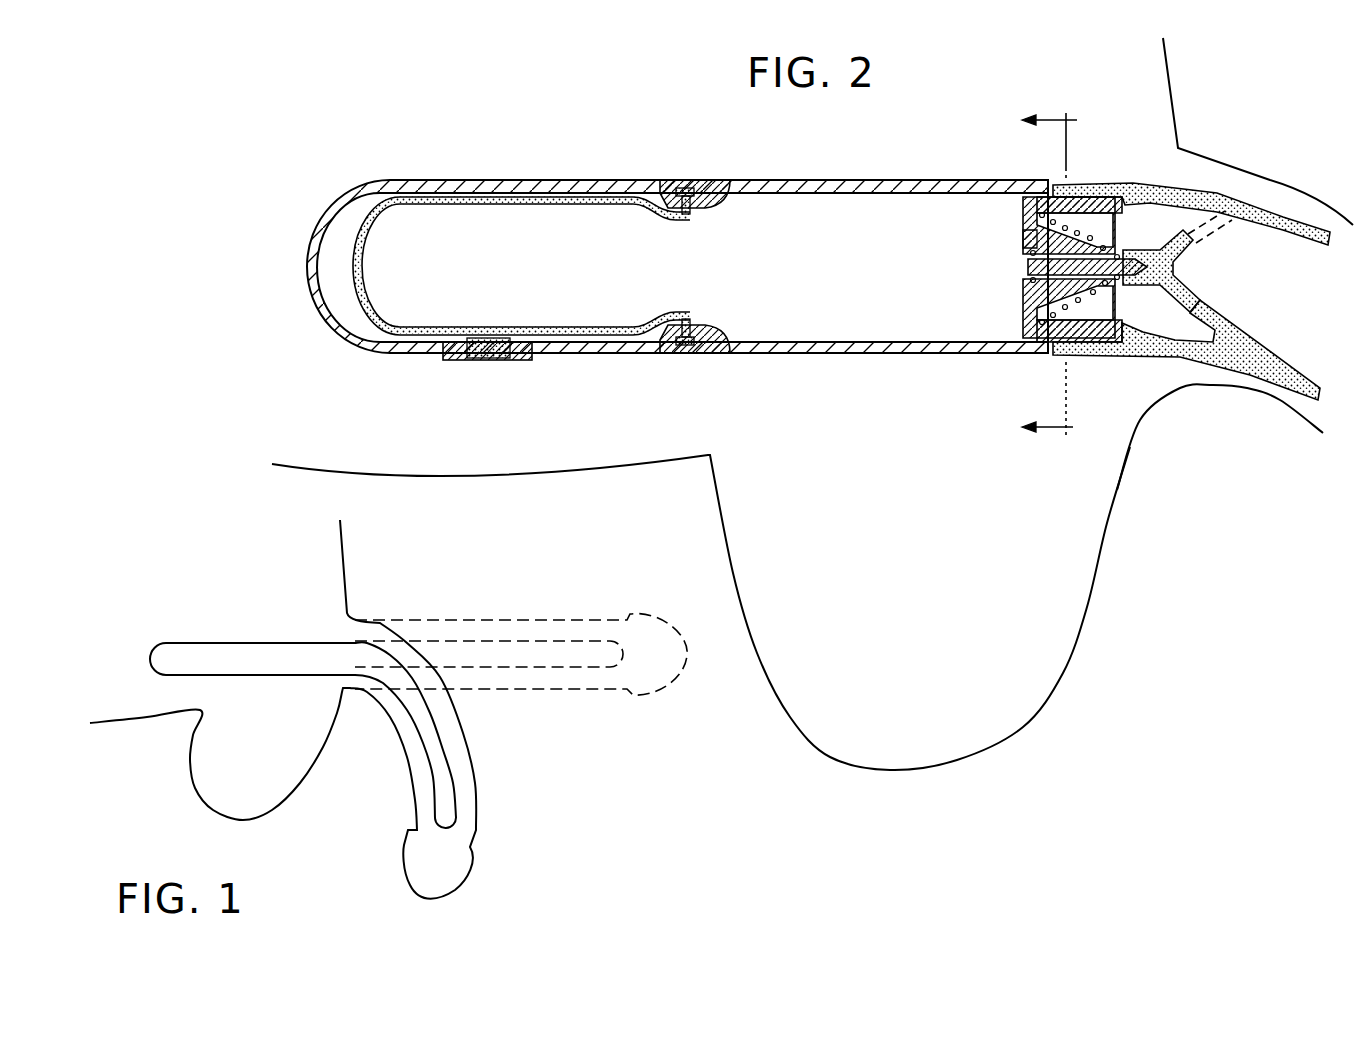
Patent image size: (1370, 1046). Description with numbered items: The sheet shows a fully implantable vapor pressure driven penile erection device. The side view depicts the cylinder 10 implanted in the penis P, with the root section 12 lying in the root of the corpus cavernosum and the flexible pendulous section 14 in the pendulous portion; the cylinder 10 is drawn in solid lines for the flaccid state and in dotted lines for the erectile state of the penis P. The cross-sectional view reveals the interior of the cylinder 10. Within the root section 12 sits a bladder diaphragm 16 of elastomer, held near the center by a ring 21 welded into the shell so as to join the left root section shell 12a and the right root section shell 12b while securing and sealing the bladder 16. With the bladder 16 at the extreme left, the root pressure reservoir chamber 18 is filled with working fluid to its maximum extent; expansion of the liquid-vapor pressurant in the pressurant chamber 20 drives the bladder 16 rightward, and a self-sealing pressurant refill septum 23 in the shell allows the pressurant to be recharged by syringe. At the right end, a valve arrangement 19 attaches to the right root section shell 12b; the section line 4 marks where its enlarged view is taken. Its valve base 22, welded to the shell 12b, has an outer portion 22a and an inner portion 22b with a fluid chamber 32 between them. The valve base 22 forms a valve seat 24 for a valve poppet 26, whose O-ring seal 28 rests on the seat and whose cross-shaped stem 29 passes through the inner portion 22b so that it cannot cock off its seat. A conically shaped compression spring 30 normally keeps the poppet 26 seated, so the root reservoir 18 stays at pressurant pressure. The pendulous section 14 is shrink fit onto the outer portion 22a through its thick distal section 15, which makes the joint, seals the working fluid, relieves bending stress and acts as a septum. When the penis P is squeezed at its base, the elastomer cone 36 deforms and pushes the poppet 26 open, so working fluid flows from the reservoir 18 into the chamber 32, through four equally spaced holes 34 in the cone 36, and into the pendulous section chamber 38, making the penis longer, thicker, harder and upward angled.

In FIG. 2, the section line 4- 4 is at (1045, 276).
In FIG. 2, the cylinder 10 is at (1125, 161).
In FIG. 1, the cylinder 10 is at (331, 622).
In FIG. 2, the root section 12 is at (674, 154).
In FIG. 1, the root section 12 is at (243, 642).
In FIG. 2, the left root section shell 12a is at (530, 180).
In FIG. 2, the right root section shell 12b is at (822, 180).
In FIG. 2, the pendulous section 14 is at (1297, 388).
In FIG. 1, the pendulous section 14 is at (543, 642).
In FIG. 2, the thick distal section 15 is at (1218, 214).
In FIG. 2, the bladder diaphragm 16 is at (504, 205).
In FIG. 2, the root pressure reservoir chamber 18 is at (830, 268).
In FIG. 2, the valve arrangement 19 is at (1137, 365).
In FIG. 2, the pressurant chamber 20 is at (330, 265).
In FIG. 2, the ring 21 is at (703, 327).
In FIG. 2, the valve base 22 is at (1022, 205).
In FIG. 2, the valve base outer portion 22a is at (1058, 184).
In FIG. 2, the valve base inner portion 22b is at (1065, 306).
In FIG. 2, the pressurant refill septum 23 is at (490, 360).
In FIG. 2, the valve seat 24 is at (1022, 239).
In FIG. 2, the valve poppet 26 is at (1023, 262).
In FIG. 2, the O-ring seal 28 is at (1036, 280).
In FIG. 2, the stem 29 is at (1112, 258).
In FIG. 2, the conically shaped compression spring 30 is at (1106, 247).
In FIG. 2, the fluid chamber 32 is at (1162, 317).
In FIG. 2, the holes 34 is at (1198, 306).
In FIG. 2, the elastomer cone 36 is at (1237, 332).
In FIG. 2, the pendulous section chamber 38 is at (1285, 265).
In FIG. 2, the penis P is at (1306, 194).
In FIG. 1, the penis P is at (588, 690).